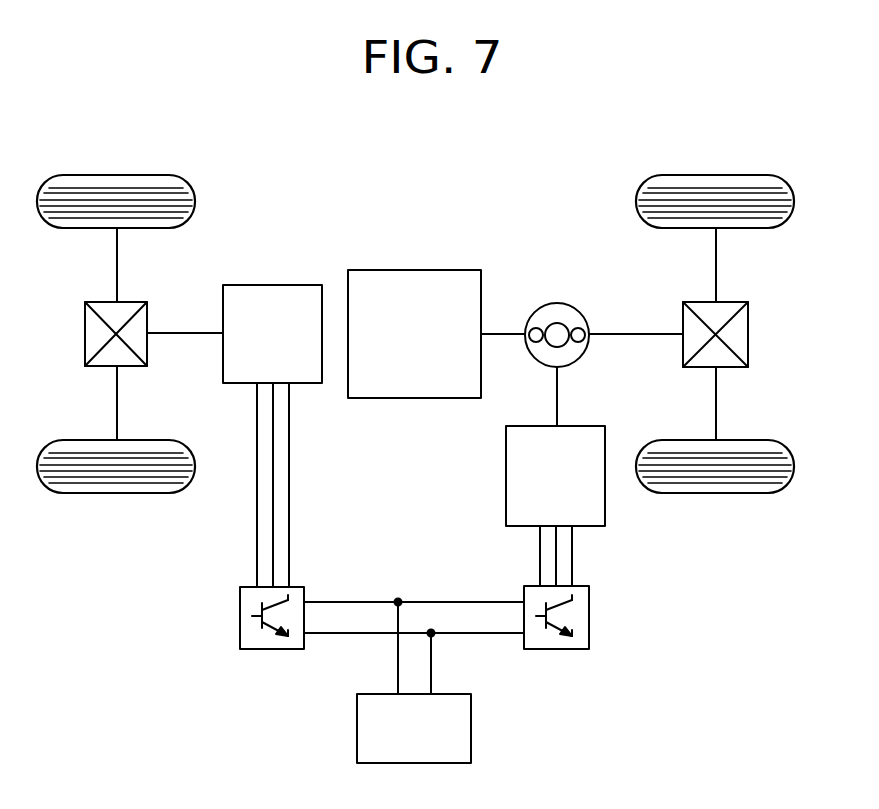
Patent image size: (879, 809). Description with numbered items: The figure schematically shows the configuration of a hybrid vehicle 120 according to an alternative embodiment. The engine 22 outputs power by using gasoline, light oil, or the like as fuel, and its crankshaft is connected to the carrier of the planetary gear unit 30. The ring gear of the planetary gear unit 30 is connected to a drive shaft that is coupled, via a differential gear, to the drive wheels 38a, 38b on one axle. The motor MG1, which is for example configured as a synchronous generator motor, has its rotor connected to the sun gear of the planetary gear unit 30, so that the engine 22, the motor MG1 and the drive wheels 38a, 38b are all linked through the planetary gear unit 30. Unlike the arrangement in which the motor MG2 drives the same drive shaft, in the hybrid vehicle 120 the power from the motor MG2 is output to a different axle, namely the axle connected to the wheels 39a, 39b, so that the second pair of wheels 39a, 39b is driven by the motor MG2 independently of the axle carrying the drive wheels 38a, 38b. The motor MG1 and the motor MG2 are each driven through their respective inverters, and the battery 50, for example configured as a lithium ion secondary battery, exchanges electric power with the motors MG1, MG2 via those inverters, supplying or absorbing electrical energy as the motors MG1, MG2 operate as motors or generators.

The hybrid vehicle 120 is at (510, 129).
The engine 22 is at (416, 268).
The planetary gear unit 30 is at (558, 302).
The battery 50 is at (472, 727).
The drive wheel 38a is at (716, 174).
The drive wheel 38b is at (716, 493).
The wheel 39a is at (117, 174).
The wheel 39b is at (117, 493).
The motor MG1 is at (505, 475).
The motor MG2 is at (272, 284).